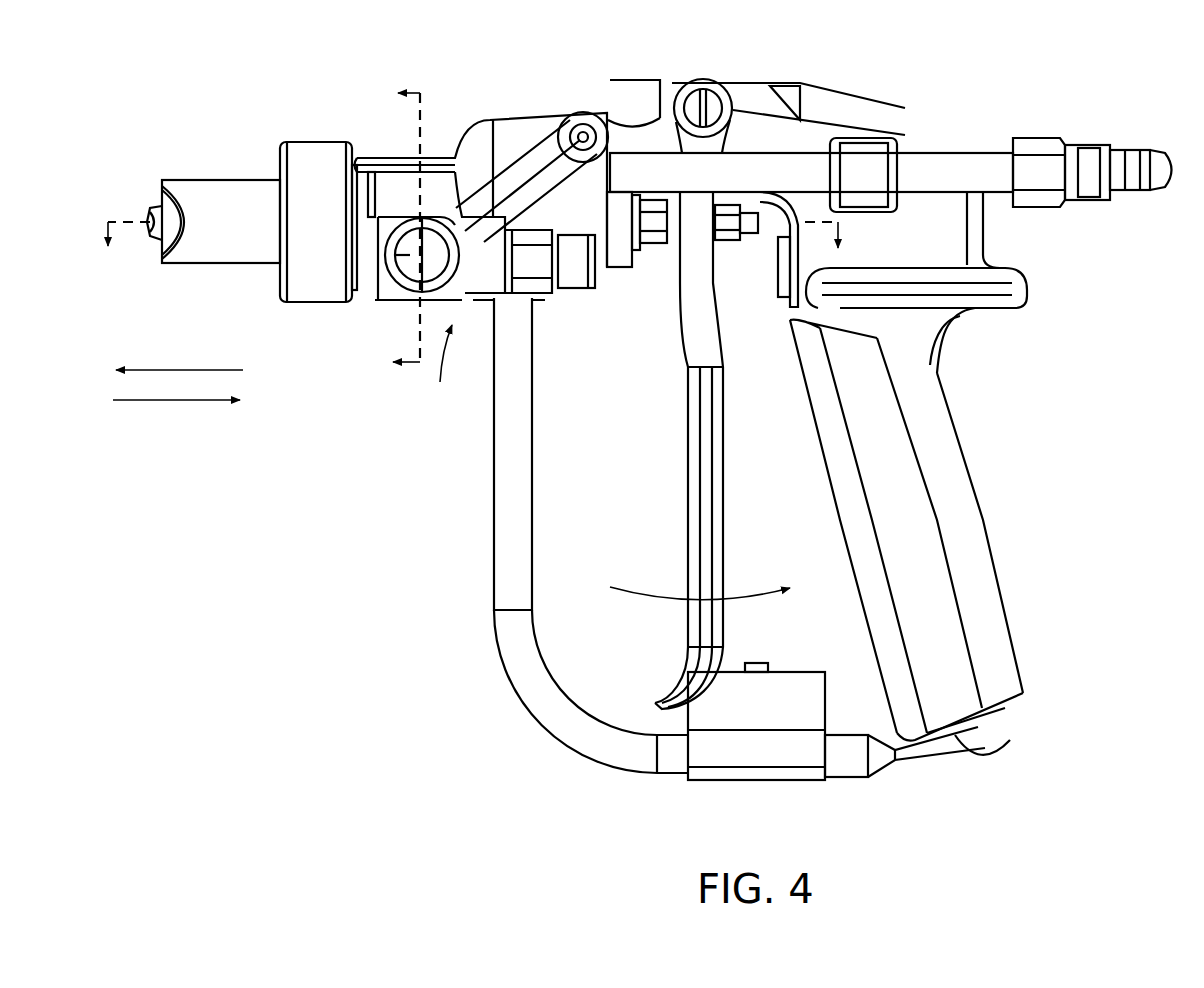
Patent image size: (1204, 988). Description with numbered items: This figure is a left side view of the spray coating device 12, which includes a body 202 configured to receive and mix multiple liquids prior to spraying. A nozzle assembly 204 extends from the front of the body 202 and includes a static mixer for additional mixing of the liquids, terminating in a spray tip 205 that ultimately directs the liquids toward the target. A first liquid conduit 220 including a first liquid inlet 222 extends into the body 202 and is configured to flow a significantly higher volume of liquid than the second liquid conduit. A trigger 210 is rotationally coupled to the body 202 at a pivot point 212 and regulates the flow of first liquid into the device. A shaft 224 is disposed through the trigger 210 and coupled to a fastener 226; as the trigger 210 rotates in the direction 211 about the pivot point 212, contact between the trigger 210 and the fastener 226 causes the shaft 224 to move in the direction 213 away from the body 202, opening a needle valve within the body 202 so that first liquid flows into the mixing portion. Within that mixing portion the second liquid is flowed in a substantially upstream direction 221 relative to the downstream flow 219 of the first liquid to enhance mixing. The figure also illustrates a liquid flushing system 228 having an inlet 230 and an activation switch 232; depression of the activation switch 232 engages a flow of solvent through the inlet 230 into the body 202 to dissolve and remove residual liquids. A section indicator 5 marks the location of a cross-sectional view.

The body 202 is at (396, 150).
The nozzle assembly 204 is at (225, 179).
The spray tip 205 is at (150, 214).
The trigger 210 is at (688, 483).
The direction 211 is at (652, 593).
The pivot point 212 is at (681, 86).
The direction 213 is at (786, 222).
The downstream flow 219 is at (182, 370).
The first liquid conduit 220 is at (963, 165).
The upstream direction 221 is at (172, 403).
The first liquid inlet 222 is at (1090, 196).
The shaft 224 is at (672, 225).
The fastener 226 is at (732, 242).
The liquid flushing system 228 is at (441, 371).
The inlet 230 is at (573, 293).
The activation switch 232 is at (376, 301).
The section line 5 is at (476, 241).
The spray coating device 12 is at (402, 231).